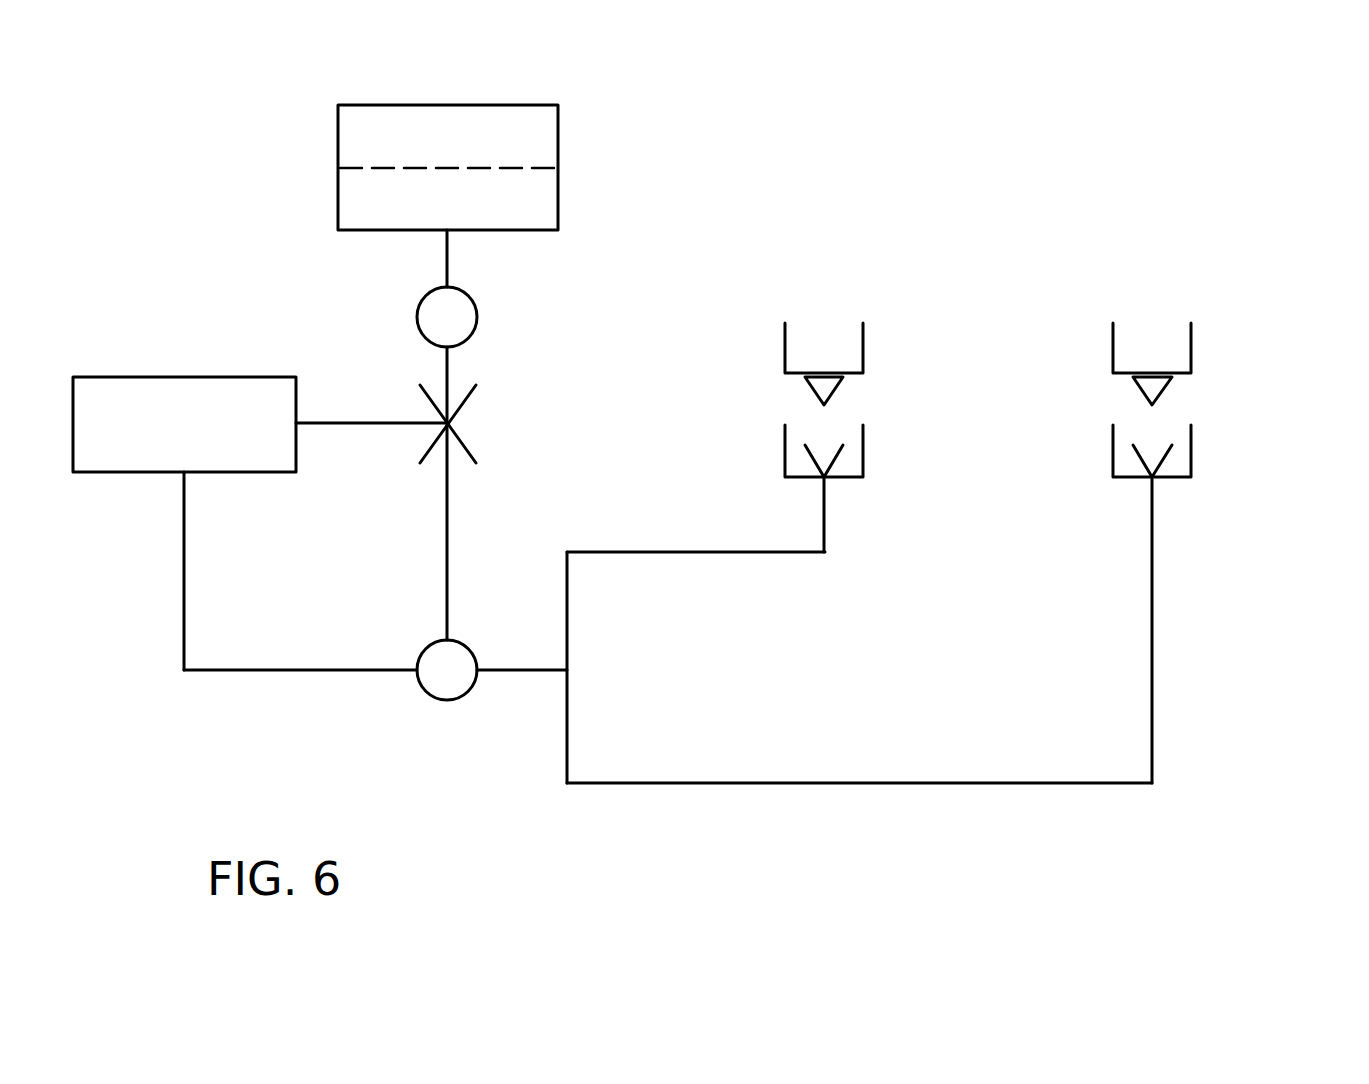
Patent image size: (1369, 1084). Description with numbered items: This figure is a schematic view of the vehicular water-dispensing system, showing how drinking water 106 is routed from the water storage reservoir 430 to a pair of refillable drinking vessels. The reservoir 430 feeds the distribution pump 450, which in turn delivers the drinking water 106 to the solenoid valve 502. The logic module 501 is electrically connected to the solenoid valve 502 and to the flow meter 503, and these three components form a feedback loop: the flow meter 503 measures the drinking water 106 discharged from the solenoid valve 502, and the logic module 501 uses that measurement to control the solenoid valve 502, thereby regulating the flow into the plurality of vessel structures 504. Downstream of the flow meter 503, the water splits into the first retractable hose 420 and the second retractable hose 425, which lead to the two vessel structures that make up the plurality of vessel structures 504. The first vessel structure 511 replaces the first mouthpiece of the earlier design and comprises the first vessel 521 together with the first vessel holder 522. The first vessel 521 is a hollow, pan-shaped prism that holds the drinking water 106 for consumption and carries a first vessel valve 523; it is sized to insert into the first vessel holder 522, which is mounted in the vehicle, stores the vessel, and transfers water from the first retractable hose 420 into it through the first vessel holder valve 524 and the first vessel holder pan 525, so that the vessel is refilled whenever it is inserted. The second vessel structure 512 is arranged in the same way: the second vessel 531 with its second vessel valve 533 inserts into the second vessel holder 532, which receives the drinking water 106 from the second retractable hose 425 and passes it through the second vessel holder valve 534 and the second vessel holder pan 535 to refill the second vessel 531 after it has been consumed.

The drinking water 106 is at (541, 200).
The water storage reservoir 430 is at (558, 178).
The distribution pump 450 is at (477, 316).
The logic module 501 is at (184, 377).
The solenoid valve 502 is at (458, 424).
The flow meter 503 is at (447, 700).
The plurality of vessel structures 504 is at (662, 803).
The first retractable hose 420 is at (702, 552).
The second retractable hose 425 is at (748, 783).
The first vessel structure 511 is at (822, 305).
The second vessel structure 512 is at (1148, 305).
The first vessel 521 is at (863, 347).
The first vessel holder 522 is at (863, 452).
The first vessel valve 523 is at (840, 388).
The first vessel holder valve 524 is at (825, 457).
The first vessel holder pan 525 is at (795, 440).
The second vessel 531 is at (1191, 348).
The second vessel holder 532 is at (1191, 452).
The second vessel valve 533 is at (1167, 395).
The second vessel holder valve 534 is at (1157, 453).
The second vessel holder pan 535 is at (1130, 448).